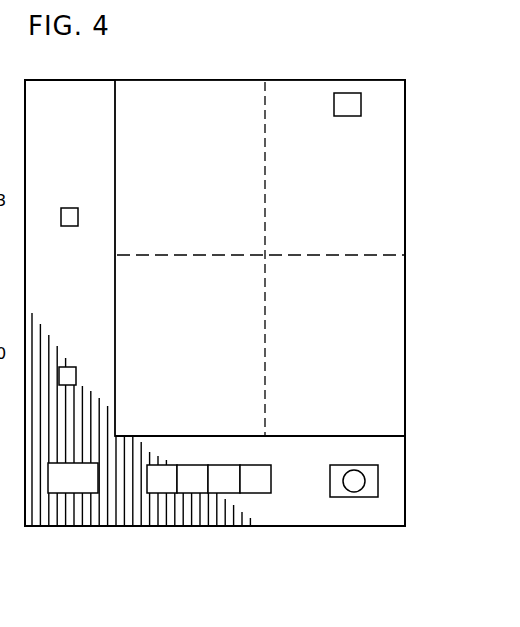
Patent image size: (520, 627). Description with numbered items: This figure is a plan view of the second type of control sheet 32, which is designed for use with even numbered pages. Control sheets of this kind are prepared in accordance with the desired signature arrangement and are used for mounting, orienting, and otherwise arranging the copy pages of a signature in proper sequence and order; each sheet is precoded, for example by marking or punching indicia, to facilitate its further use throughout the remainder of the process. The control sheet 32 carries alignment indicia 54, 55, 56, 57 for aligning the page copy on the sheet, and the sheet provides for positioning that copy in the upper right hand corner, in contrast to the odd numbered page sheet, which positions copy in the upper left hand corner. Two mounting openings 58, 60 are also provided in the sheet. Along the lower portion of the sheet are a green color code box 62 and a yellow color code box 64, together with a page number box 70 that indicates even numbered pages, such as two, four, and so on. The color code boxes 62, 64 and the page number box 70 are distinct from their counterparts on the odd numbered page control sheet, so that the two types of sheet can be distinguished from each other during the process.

The control sheet 32 is at (157, 529).
The alignment indicia 54 is at (381, 436).
The alignment indicia 55 is at (406, 160).
The alignment indicia 56 is at (117, 323).
The alignment indicia 57 is at (361, 95).
The mounting opening 58 is at (59, 219).
The mounting opening 60 is at (58, 376).
The green color code box 62 is at (67, 486).
The yellow color code box 64 is at (353, 492).
The page number box 70 is at (227, 494).